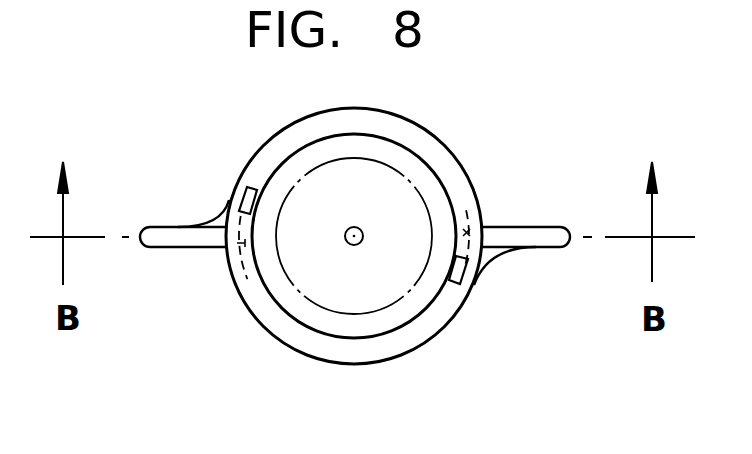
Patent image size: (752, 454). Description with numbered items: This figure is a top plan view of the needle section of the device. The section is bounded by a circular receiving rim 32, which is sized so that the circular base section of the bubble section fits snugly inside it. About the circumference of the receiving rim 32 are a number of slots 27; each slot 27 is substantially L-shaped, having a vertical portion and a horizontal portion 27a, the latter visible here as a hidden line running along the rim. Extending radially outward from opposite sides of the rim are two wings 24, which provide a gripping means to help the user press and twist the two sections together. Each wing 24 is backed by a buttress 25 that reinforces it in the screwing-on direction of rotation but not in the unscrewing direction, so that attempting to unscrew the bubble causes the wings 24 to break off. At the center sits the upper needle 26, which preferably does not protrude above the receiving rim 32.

The wing 24 is at (178, 247).
The buttress 25 is at (217, 217).
The upper needle 26 is at (355, 245).
The slot 27 is at (243, 188).
The horizontal portion 27a is at (247, 279).
The receiving rim 32 is at (363, 355).